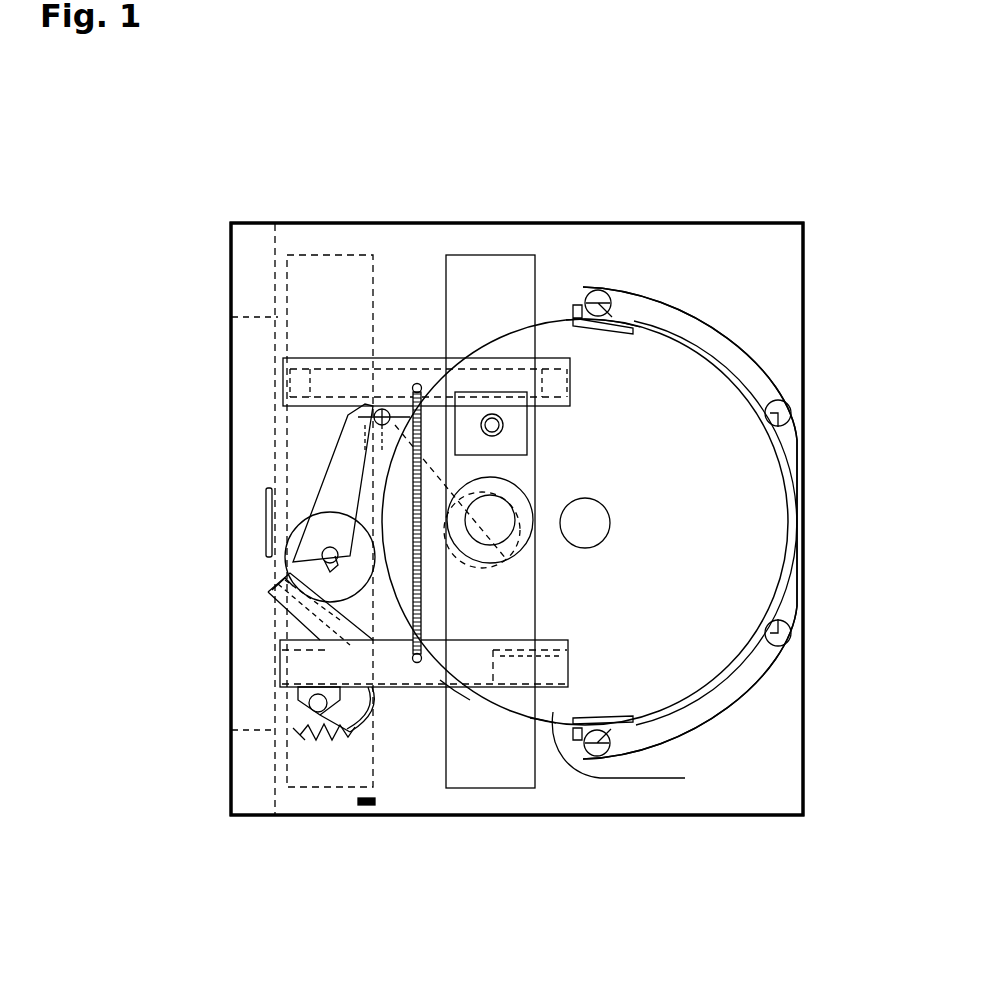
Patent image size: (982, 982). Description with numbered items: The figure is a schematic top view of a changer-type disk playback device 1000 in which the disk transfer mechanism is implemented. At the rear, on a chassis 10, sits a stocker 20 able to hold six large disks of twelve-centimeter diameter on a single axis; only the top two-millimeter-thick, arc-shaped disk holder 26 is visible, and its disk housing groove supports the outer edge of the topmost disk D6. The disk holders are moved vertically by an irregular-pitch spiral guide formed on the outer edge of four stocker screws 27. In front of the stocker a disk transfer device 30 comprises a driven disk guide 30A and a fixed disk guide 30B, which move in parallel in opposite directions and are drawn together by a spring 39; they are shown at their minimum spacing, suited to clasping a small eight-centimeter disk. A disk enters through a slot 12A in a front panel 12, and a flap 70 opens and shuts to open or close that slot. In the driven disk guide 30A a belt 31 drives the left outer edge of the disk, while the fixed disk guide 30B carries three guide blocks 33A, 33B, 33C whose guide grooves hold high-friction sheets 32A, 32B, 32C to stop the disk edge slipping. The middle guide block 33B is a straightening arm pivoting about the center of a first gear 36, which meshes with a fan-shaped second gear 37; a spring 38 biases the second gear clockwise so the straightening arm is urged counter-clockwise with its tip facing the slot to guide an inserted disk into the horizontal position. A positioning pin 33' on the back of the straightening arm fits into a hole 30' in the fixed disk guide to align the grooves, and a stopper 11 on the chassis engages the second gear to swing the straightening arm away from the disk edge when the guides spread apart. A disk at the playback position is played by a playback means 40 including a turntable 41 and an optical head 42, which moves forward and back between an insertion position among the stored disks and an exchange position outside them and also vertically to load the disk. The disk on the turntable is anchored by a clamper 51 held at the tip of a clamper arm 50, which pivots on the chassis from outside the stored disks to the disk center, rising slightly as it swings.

The disk playback device 1000 is at (527, 205).
The chassis 10 is at (665, 240).
The stopper 11 is at (368, 810).
The front panel 12 is at (250, 270).
The slot 12A is at (250, 312).
The stocker 20 is at (767, 347).
The disk holder 26 is at (667, 312).
The stocker screws 27 is at (783, 513).
The disk transfer device 30 is at (585, 522).
The driven disk guide 30A is at (578, 375).
The fixed disk guide 30B is at (548, 640).
The hole 30' is at (470, 721).
The belt 31 is at (347, 395).
The friction sheet 32A is at (300, 670).
The friction sheet 32B is at (280, 606).
The friction sheet 32C is at (552, 650).
The positioning pin 33' is at (266, 557).
The guide block 33A is at (335, 703).
The straightening arm 33B is at (283, 592).
The guide block 33C is at (552, 670).
The first gear 36 is at (373, 690).
The second gear 37 is at (298, 733).
The spring 38 is at (300, 740).
The spring 39 is at (422, 590).
The playback means 40 is at (603, 433).
The turntable 41 is at (520, 500).
The optical head 42 is at (520, 435).
The clamper arm 50 is at (335, 460).
The clamper 51 is at (302, 515).
The flap 70 is at (268, 515).
The large size disk D6 is at (640, 754).